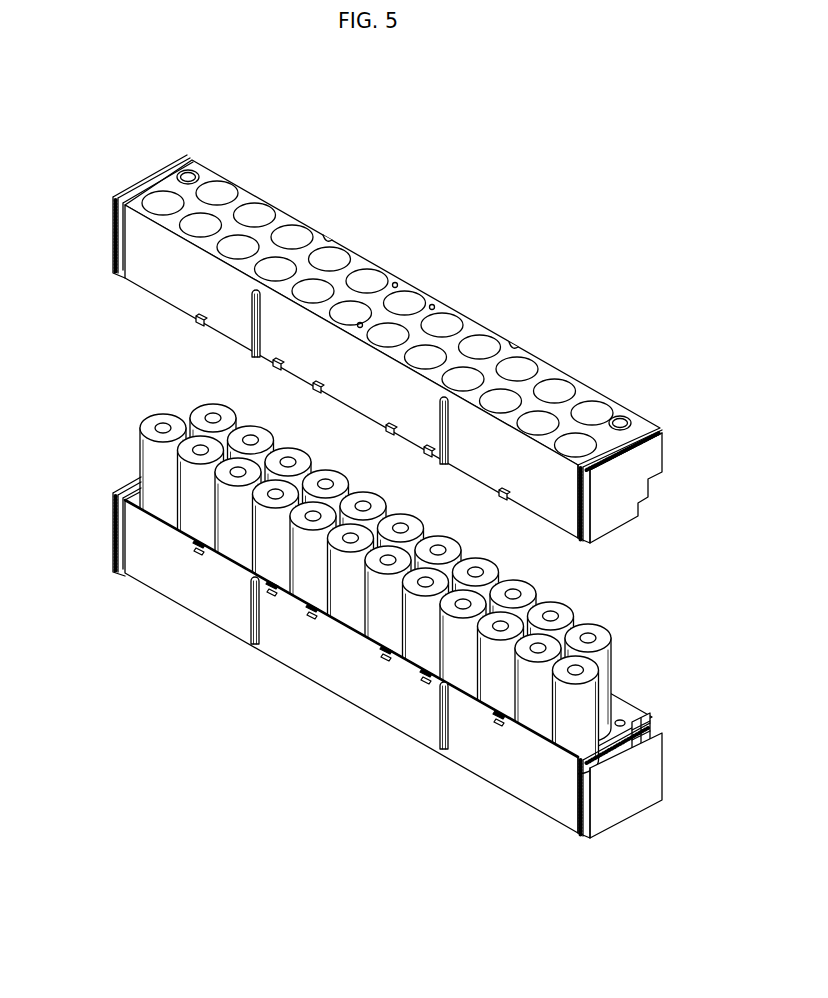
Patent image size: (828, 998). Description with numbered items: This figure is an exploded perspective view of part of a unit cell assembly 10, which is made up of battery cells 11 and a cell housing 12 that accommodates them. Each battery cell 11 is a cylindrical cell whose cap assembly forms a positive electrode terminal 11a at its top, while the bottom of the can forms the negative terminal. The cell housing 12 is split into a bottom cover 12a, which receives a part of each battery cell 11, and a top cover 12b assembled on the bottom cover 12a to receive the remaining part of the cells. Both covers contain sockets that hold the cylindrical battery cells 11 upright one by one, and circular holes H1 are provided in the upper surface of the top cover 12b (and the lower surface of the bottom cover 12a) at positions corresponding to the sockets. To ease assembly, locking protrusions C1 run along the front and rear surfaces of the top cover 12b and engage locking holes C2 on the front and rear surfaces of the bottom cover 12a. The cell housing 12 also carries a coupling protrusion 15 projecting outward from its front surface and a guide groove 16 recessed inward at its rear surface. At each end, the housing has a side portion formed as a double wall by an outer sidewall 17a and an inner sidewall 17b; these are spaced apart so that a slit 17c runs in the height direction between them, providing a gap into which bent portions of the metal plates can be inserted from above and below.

The cell assembly 10 is at (110, 90).
The battery cell 11 is at (612, 655).
The positive electrode terminal 11a is at (555, 612).
The cell housing 12 is at (63, 313).
The bottom cover 12a is at (110, 506).
The top cover 12b is at (118, 289).
The coupling protrusion 15 is at (252, 630).
The guide groove 16 is at (328, 236).
The outer sidewall 17a is at (112, 227).
The inner sidewall 17b is at (651, 740).
The slit 17c is at (172, 184).
The locking protrusion C1 is at (197, 326).
The locking hole C2 is at (200, 553).
The circular hole H1 is at (405, 303).